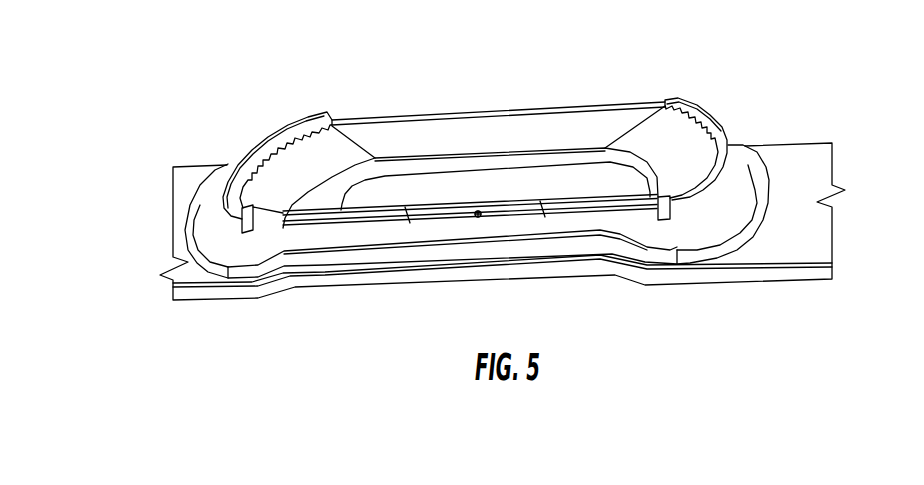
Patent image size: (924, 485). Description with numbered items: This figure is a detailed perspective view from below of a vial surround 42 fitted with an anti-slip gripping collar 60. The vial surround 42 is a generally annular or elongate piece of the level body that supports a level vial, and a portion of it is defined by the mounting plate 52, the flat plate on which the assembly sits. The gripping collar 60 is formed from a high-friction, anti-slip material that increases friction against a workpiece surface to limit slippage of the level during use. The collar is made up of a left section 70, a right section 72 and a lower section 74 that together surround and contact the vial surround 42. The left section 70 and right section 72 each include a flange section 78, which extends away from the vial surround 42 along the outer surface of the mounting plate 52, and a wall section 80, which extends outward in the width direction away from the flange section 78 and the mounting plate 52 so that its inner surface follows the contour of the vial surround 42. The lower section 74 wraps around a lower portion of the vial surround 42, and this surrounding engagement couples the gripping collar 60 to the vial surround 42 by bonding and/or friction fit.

The vial surround 42 is at (555, 138).
The mounting plate 52 is at (813, 215).
The gripping collar 60 is at (808, 114).
The left section 70 is at (220, 113).
The right section 72 is at (772, 244).
The lower section 74 is at (552, 254).
The flange section 78 is at (228, 267).
The wall section 80 is at (225, 232).